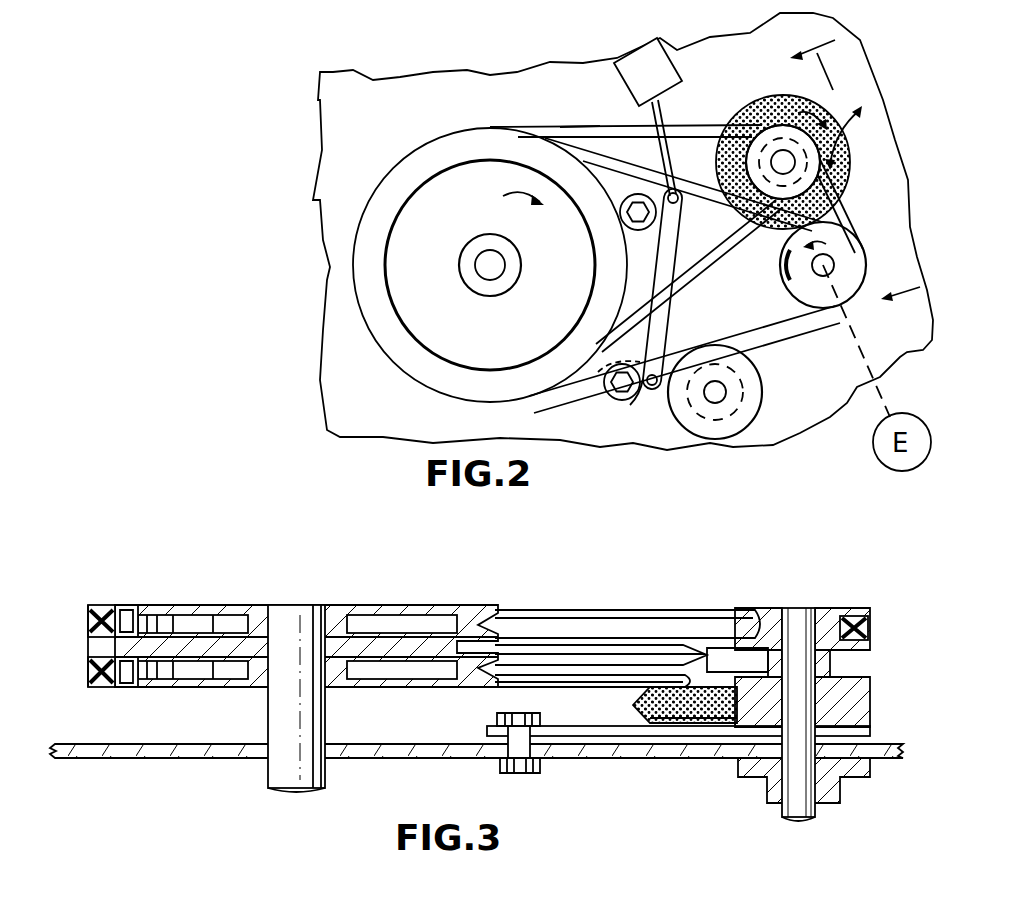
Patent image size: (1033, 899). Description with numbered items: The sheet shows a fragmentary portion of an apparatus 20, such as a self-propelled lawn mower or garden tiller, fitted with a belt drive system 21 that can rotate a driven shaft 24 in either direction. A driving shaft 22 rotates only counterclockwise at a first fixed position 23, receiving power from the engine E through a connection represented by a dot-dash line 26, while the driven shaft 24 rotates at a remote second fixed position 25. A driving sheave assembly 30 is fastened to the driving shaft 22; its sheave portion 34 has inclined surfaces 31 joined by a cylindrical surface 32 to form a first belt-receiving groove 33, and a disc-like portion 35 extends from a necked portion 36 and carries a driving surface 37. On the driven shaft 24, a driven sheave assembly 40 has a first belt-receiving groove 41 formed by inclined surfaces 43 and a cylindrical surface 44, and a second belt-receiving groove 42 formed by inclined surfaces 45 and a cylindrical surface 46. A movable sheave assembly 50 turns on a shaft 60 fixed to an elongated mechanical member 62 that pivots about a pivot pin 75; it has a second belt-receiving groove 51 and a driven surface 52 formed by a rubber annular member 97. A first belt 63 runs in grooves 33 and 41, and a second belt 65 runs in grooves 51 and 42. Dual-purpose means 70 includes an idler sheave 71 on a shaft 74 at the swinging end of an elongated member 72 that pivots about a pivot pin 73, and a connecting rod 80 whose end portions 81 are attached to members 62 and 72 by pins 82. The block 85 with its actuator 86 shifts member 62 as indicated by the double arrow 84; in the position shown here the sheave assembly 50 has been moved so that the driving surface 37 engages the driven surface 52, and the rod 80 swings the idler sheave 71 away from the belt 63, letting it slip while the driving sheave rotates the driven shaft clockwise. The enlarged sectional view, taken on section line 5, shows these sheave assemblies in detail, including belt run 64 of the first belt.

In FIG. 2, the section line 5- 5 is at (857, 218).
In FIG. 2, the apparatus 20 is at (338, 150).
In FIG. 3, the apparatus 20 is at (83, 742).
In FIG. 2, the belt drive system 21 is at (482, 100).
In FIG. 3, the belt drive system 21 is at (108, 534).
In FIG. 2, the driving shaft 22 is at (836, 255).
In FIG. 3, the driving shaft 22 is at (815, 657).
In FIG. 2, the first fixed position 23 is at (846, 255).
In FIG. 2, the driven shaft 24 is at (488, 282).
In FIG. 3, the driven shaft 24 is at (278, 710).
In FIG. 2, the second fixed position 25 is at (462, 262).
In FIG. 2, the dot-dash line 26 is at (884, 386).
In FIG. 3, the driving sheave assembly 30 is at (876, 692).
In FIG. 3, the inclined surfaces 31 is at (857, 607).
In FIG. 3, the cylindrical surface 32 is at (827, 605).
In FIG. 3, the first belt-receiving groove 33 is at (840, 633).
In FIG. 2, the sheave portion 34 is at (862, 290).
In FIG. 3, the sheave portion 34 is at (768, 617).
In FIG. 3, the disc-like portion 35 is at (860, 730).
In FIG. 3, the necked portion 36 is at (833, 663).
In FIG. 2, the driving surface 37 is at (790, 262).
In FIG. 3, the driving surface 37 is at (870, 712).
In FIG. 2, the driven sheave assembly 40 is at (352, 305).
In FIG. 3, the driven sheave assembly 40 is at (336, 585).
In FIG. 3, the first belt-receiving groove 41 is at (500, 625).
In FIG. 3, the second belt-receiving groove 42 is at (500, 669).
In FIG. 3, the inclined surfaces 43 is at (100, 610).
In FIG. 3, the right circular cylindrical surface 44 is at (120, 618).
In FIG. 3, the inclined surfaces 45 is at (97, 662).
In FIG. 3, the right circular cylindrical surface 46 is at (110, 687).
In FIG. 2, the movable sheave assembly 50 is at (830, 168).
In FIG. 3, the movable sheave assembly 50 is at (713, 633).
In FIG. 3, the second belt-receiving groove 51 is at (692, 648).
In FIG. 2, the driven surface 52 is at (833, 112).
In FIG. 2, the shaft 60 is at (783, 152).
In FIG. 2, the elongated mechanical member 62 is at (691, 160).
In FIG. 3, the elongated mechanical member 62 is at (593, 735).
In FIG. 2, the first belt 63 is at (780, 320).
In FIG. 3, the first belt 63 is at (593, 618).
In FIG. 2, the belt run 64 is at (573, 123).
In FIG. 3, the second belt 65 is at (623, 667).
In FIG. 2, the dual-purpose means 70 is at (760, 430).
In FIG. 2, the idler sheave 71 is at (720, 427).
In FIG. 2, the elongated member 72 is at (640, 428).
In FIG. 2, the pivot pin 73 is at (597, 387).
In FIG. 2, the shaft 74 is at (727, 390).
In FIG. 2, the pivot pin 75 is at (625, 213).
In FIG. 3, the pivot pin 75 is at (500, 765).
In FIG. 2, the connecting rod 80 is at (670, 315).
In FIG. 2, the end portions 81 is at (672, 170).
In FIG. 2, the pins 82 is at (673, 203).
In FIG. 2, the double arrow 84 is at (877, 100).
In FIG. 2, the rectangular block 85 is at (660, 37).
In FIG. 2, the actuator 86 is at (656, 103).
In FIG. 3, the annular member 97 is at (700, 703).